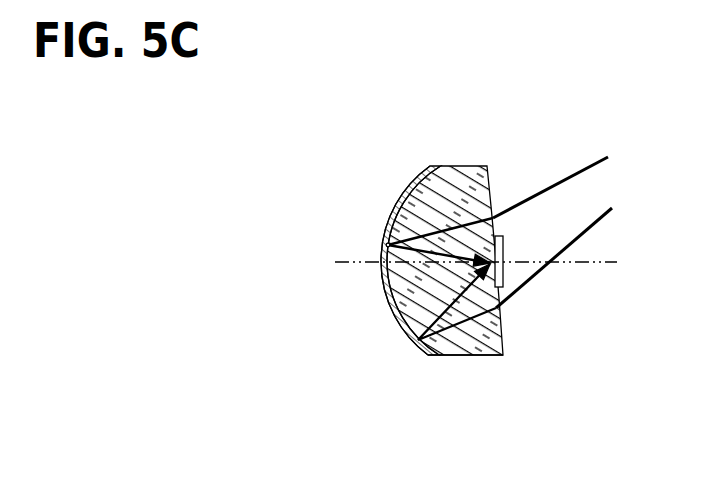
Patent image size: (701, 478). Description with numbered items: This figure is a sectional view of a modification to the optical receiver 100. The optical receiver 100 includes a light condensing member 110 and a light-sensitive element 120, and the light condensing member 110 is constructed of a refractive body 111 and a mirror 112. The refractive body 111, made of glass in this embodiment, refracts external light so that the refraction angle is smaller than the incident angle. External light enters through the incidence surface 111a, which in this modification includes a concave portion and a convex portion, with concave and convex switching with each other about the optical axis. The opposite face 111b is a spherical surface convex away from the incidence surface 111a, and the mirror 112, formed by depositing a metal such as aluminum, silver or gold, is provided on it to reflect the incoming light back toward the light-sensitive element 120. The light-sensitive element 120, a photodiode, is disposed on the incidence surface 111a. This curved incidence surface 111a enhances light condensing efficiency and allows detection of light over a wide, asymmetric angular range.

The optical receiver 100 is at (456, 237).
The light condensing member 110 is at (415, 237).
The refractive body 111 is at (415, 262).
The incidence surface 111a is at (504, 353).
The opposite face 111b is at (386, 282).
The mirror 112 is at (410, 233).
The light-sensitive element 120 is at (504, 240).